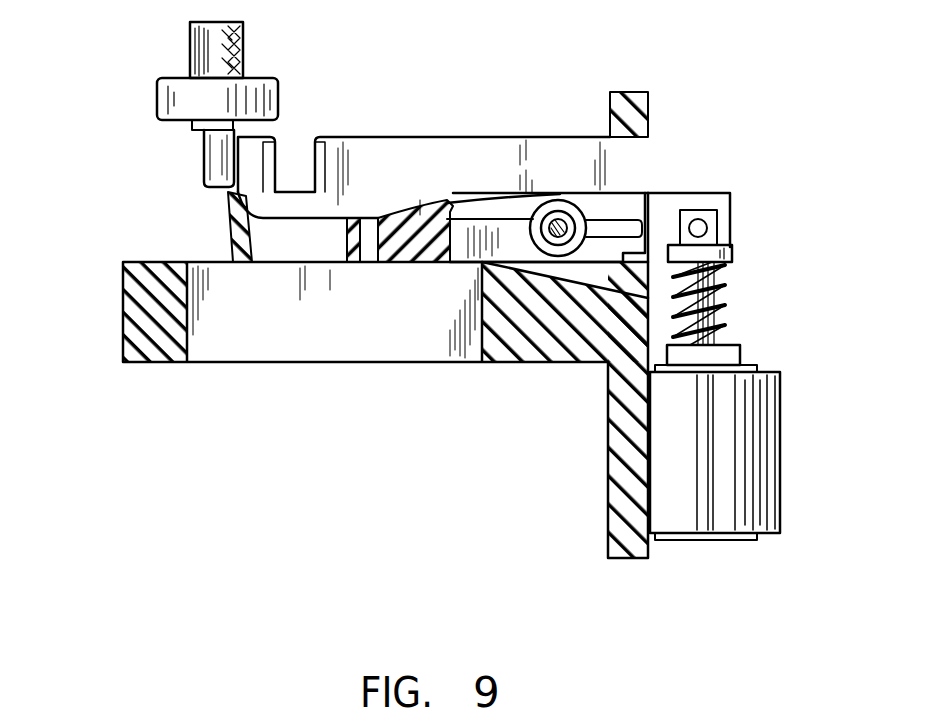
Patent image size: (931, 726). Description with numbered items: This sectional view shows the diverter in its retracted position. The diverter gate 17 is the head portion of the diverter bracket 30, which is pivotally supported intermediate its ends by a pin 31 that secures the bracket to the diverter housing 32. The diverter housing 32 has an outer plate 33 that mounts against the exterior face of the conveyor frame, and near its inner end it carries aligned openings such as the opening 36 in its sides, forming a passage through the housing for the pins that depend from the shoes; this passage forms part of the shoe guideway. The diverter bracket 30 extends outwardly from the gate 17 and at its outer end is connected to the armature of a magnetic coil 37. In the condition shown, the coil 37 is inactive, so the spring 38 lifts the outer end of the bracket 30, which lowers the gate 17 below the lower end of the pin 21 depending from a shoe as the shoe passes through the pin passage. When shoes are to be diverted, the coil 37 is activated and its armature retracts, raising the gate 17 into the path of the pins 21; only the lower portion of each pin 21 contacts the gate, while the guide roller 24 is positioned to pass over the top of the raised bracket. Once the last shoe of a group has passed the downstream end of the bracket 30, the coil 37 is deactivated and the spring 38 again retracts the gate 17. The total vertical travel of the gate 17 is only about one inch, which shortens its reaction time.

The diverter gate 17 is at (257, 235).
The pin 21 is at (205, 163).
The guide roller 24 is at (155, 100).
The diverter bracket 30 is at (467, 192).
The pin 31 is at (562, 226).
The diverter housing 32 is at (523, 365).
The outer plate 33 is at (608, 480).
The opening 36 is at (293, 163).
The magnetic coil 37 is at (677, 512).
The spring 38 is at (730, 303).